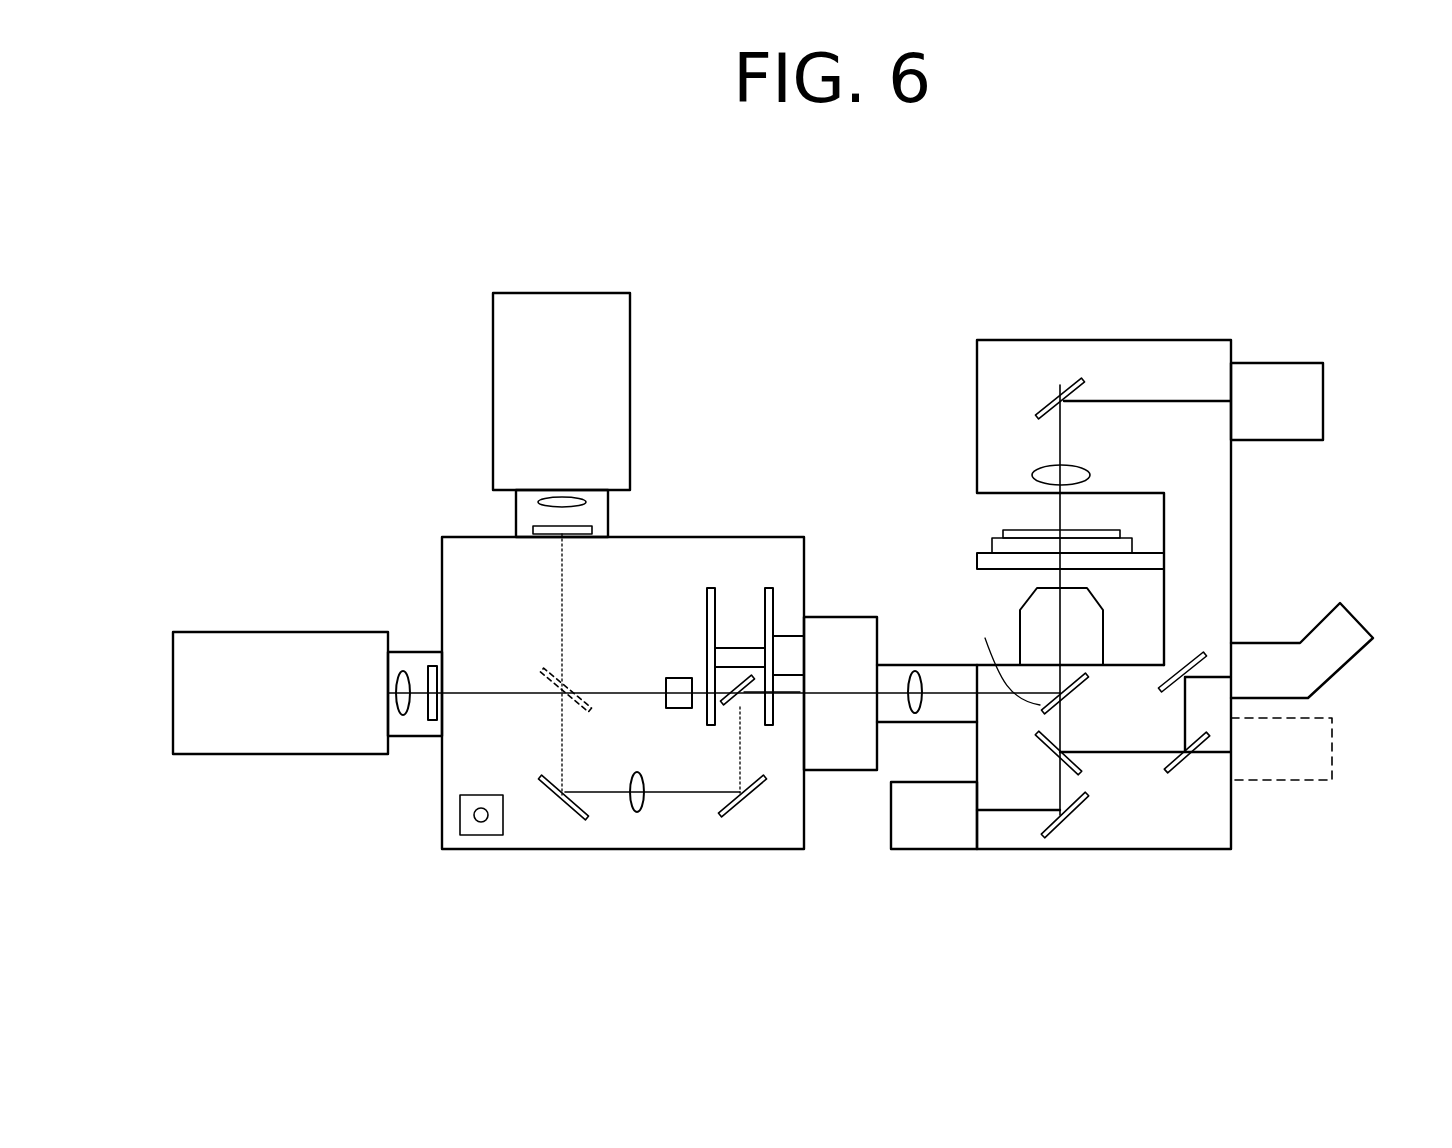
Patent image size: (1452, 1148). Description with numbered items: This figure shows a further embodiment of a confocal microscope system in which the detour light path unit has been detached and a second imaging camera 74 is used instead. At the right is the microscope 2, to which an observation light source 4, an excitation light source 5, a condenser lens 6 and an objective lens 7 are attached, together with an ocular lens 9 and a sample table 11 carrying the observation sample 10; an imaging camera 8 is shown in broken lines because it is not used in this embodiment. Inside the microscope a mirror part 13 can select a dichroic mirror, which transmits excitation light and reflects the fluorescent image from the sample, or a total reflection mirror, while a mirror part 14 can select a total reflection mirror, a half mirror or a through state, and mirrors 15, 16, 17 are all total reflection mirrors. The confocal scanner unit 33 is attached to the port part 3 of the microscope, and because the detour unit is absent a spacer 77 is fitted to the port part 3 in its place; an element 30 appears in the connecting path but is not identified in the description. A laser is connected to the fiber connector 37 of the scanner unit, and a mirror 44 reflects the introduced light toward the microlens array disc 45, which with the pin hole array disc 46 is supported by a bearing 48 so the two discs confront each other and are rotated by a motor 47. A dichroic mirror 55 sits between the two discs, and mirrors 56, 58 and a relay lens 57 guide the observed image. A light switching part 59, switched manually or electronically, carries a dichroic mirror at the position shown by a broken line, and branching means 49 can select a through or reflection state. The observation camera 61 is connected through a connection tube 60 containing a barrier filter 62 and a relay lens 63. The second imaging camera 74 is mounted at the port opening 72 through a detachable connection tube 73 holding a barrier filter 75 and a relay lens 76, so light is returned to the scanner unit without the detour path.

The microscope 2 is at (1101, 216).
The port part 3 is at (897, 660).
The observation light source 4 is at (1323, 395).
The excitation light source 5 is at (930, 850).
The condenser lens 6 is at (1044, 468).
The objective lens 7 is at (1103, 623).
The imaging camera 8 is at (1332, 750).
The ocular lens 9 is at (1360, 617).
The observation sample 10 is at (1022, 532).
The sample table 11 is at (990, 547).
The mirror part 13 is at (1080, 772).
The mirror part 14 is at (1180, 772).
The mirror 15 is at (1193, 652).
The mirror 16 is at (1040, 408).
The mirror 17 is at (1068, 817).
The lens 30 is at (915, 670).
The confocal scanner unit 33 is at (440, 570).
The fiber connector 37 is at (470, 830).
The mirror 44 is at (678, 710).
The microlens array disc 45 is at (710, 590).
The pin hole array disc 46 is at (768, 588).
The motor 47 is at (790, 687).
The bearing 48 is at (740, 648).
The branching means 49 is at (979, 869).
The dichroic mirror 55 is at (790, 683).
The mirror 56 is at (742, 820).
The relay lens 57 is at (635, 813).
The mirror 58 is at (565, 818).
The light switching part 59 is at (540, 683).
The connection tube 60 is at (412, 652).
The observation camera 61 is at (262, 632).
The barrier filter 62 is at (430, 722).
The relay lens 63 is at (395, 708).
The port opening 72 is at (533, 530).
The connection tube 73 is at (516, 515).
The second imaging camera 74 is at (545, 293).
The barrier filter 75 is at (540, 502).
The relay lens 76 is at (552, 490).
The spacer 77 is at (835, 617).